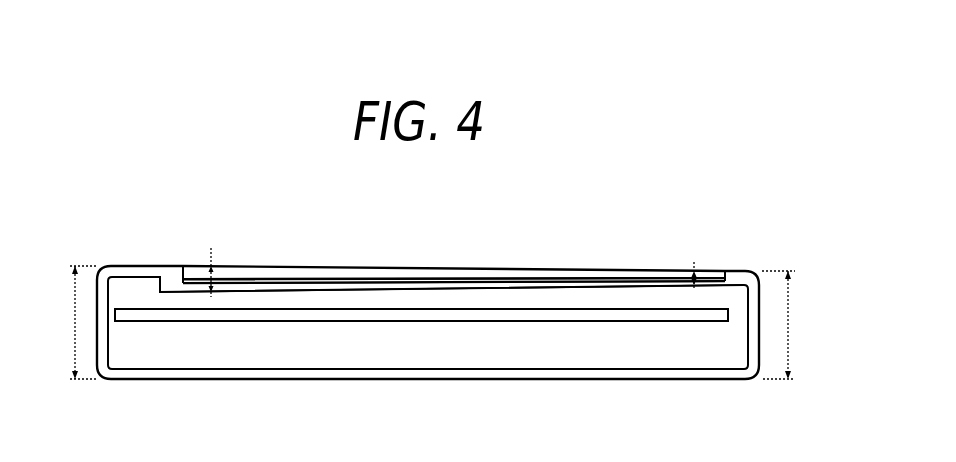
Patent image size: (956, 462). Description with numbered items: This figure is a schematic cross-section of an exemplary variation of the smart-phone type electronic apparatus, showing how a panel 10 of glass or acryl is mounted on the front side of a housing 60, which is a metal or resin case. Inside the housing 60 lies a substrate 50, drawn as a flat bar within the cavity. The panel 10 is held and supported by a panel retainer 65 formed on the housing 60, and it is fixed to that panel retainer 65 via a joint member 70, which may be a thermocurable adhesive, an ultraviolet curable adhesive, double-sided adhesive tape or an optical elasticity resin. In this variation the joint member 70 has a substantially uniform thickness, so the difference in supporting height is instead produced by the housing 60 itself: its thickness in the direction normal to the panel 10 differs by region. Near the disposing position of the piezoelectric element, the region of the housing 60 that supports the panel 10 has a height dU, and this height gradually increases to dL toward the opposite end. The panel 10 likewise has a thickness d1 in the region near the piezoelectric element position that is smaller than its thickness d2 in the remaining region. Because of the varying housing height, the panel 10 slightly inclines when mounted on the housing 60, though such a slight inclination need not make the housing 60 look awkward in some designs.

The panel 10 is at (358, 275).
The substrate 50 is at (343, 313).
The housing 60 is at (441, 373).
The panel retainer 65 is at (420, 287).
The joint member 70 is at (487, 282).
The thickness d1 is at (694, 274).
The thickness d2 is at (213, 273).
The thickness dL is at (72, 322).
The thickness dU is at (790, 325).